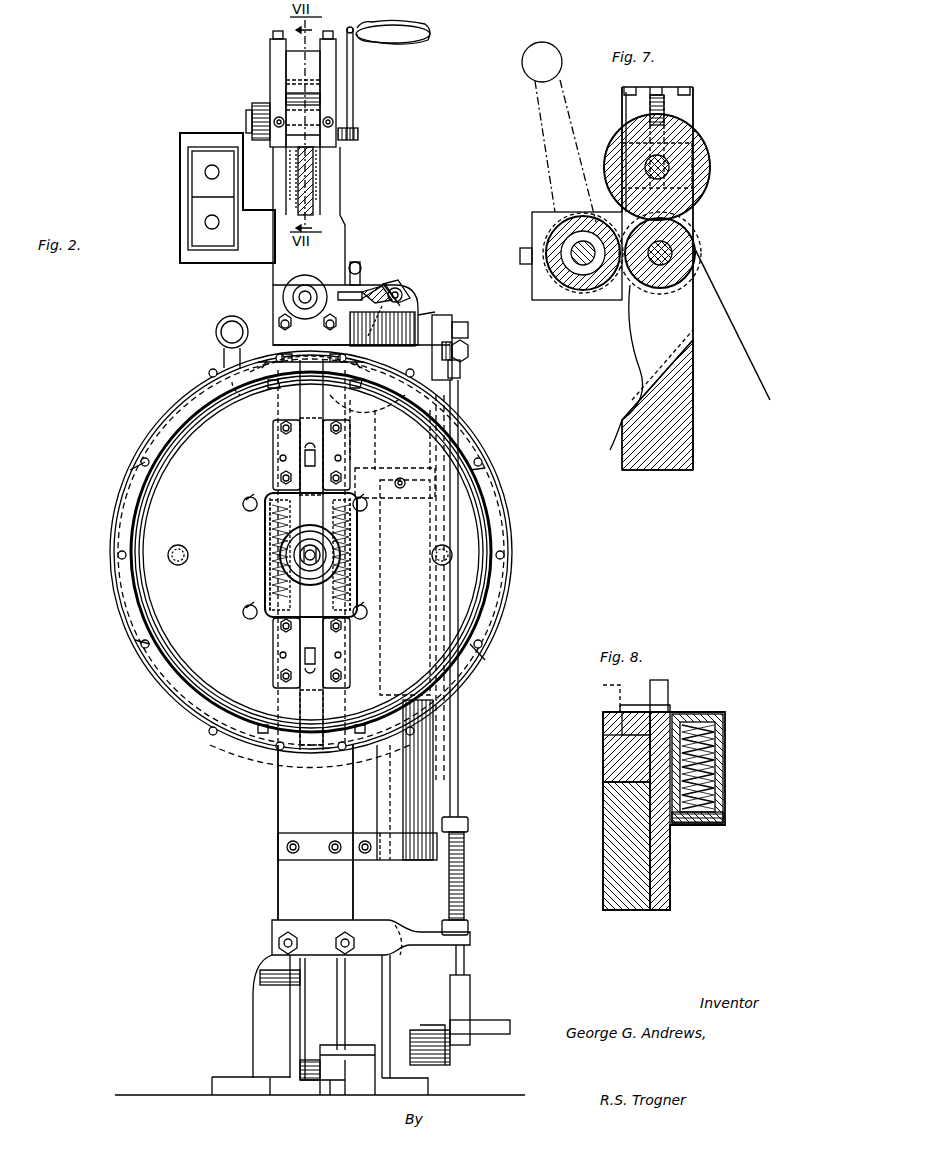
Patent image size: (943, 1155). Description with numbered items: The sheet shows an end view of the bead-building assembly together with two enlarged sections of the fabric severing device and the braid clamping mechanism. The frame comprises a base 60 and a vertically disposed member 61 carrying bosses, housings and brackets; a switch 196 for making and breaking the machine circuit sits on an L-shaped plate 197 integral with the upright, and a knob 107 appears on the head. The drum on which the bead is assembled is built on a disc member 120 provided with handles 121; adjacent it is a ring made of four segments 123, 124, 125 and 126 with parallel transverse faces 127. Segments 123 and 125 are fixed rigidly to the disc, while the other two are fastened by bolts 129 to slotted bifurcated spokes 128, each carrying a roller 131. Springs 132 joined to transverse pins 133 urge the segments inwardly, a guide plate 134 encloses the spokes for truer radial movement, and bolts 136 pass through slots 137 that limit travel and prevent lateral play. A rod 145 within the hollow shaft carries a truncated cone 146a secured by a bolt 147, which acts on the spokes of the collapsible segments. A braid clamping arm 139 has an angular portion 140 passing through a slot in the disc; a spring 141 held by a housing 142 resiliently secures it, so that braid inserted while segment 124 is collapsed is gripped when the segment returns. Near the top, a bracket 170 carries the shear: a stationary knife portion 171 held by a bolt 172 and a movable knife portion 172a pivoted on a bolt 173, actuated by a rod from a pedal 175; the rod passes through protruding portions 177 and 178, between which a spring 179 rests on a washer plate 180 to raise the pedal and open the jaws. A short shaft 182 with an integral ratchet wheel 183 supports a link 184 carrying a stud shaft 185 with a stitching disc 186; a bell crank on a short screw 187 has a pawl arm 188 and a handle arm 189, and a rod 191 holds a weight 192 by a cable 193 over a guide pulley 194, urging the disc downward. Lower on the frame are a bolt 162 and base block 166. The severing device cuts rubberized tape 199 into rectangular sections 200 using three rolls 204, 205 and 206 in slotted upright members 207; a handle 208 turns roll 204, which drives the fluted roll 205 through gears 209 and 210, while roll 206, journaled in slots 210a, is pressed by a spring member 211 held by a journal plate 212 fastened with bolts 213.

In FIG. 2, the base 60 is at (276, 808).
In FIG. 2, the vertically disposed member 61 is at (285, 266).
In FIG. 2, the knob 107 is at (216, 326).
In FIG. 8, the disc member 120 is at (672, 866).
In FIG. 2, the handles 121 is at (180, 565).
In FIG. 2, the ring segment 123 is at (112, 531).
In FIG. 2, the ring segment 124 is at (194, 403).
In FIG. 8, the ring segment 124 is at (604, 739).
In FIG. 2, the ring segment 125 is at (510, 542).
In FIG. 2, the ring segment 126 is at (246, 748).
In FIG. 2, the transverse faces 127 is at (134, 462).
In FIG. 2, the slotted bifurcated spokes 128 is at (300, 427).
In FIG. 2, the bolts 129 is at (300, 403).
In FIG. 2, the roller 131 is at (272, 522).
In FIG. 2, the springs 132 is at (282, 442).
In FIG. 2, the transverse pins 133 is at (262, 503).
In FIG. 2, the guide plate 134 is at (338, 452).
In FIG. 2, the bolts 136 is at (305, 458).
In FIG. 2, the slots 137 is at (305, 662).
In FIG. 8, the braid clamping arm 139 is at (698, 824).
In FIG. 2, the angular portion 140 is at (272, 356).
In FIG. 8, the angular portion 140 is at (664, 702).
In FIG. 8, the spring 141 is at (716, 749).
In FIG. 8, the housing 142 is at (725, 716).
In FIG. 2, the rod 145 is at (326, 555).
In FIG. 2, the truncated cone 146a is at (282, 558).
In FIG. 2, the bolt 147 is at (318, 562).
In FIG. 2, the bolt 162 is at (260, 978).
In FIG. 2, the base 166 is at (358, 1090).
In FIG. 2, the bracket 170 is at (428, 312).
In FIG. 2, the knife portion 171 is at (440, 322).
In FIG. 2, the bolt 172 is at (460, 326).
In FIG. 2, the knife portion 172a is at (460, 370).
In FIG. 2, the bolt 173 is at (468, 349).
In FIG. 2, the pedal 175 is at (490, 1020).
In FIG. 2, the protruding portion 177 is at (468, 823).
In FIG. 2, the protruding portion 178 is at (468, 941).
In FIG. 2, the spring 179 is at (464, 888).
In FIG. 2, the washer plate 180 is at (468, 926).
In FIG. 2, the short shaft 182 is at (398, 288).
In FIG. 2, the ratchet wheel 183 is at (402, 296).
In FIG. 2, the link 184 is at (400, 288).
In FIG. 2, the stud shaft 185 is at (300, 297).
In FIG. 2, the disc 186 is at (283, 292).
In FIG. 2, the short screw 187 is at (380, 293).
In FIG. 2, the arm 188 is at (380, 310).
In FIG. 2, the arm 189 is at (356, 294).
In FIG. 2, the rod 191 is at (355, 262).
In FIG. 2, the weight 192 is at (428, 522).
In FIG. 2, the cable 193 is at (405, 450).
In FIG. 2, the guide pulley 194 is at (362, 408).
In FIG. 2, the switch 196 is at (206, 220).
In FIG. 2, the L-shaped plate 197 is at (182, 253).
In FIG. 7, the rubberized tape 199 is at (730, 318).
In FIG. 2, the rectangular sections 200 is at (312, 190).
In FIG. 7, the rectangular sections 200 is at (640, 368).
In FIG. 7, the roll 204 is at (580, 292).
In FIG. 7, the roll 205 is at (696, 254).
In FIG. 7, the roll 206 is at (712, 172).
In FIG. 2, the slotted upright members 207 is at (286, 83).
In FIG. 2, the handle 208 is at (398, 25).
In FIG. 7, the handle 208 is at (521, 63).
In FIG. 2, the gear 209 is at (252, 112).
In FIG. 7, the gear 209 is at (550, 240).
In FIG. 7, the gear 210 is at (700, 240).
In FIG. 7, the slots 210a is at (700, 186).
In FIG. 7, the spring member 211 is at (680, 118).
In FIG. 2, the journal plate 212 is at (272, 53).
In FIG. 7, the journal plate 212 is at (624, 101).
In FIG. 2, the bolts 213 is at (278, 31).
In FIG. 7, the bolts 213 is at (642, 88).